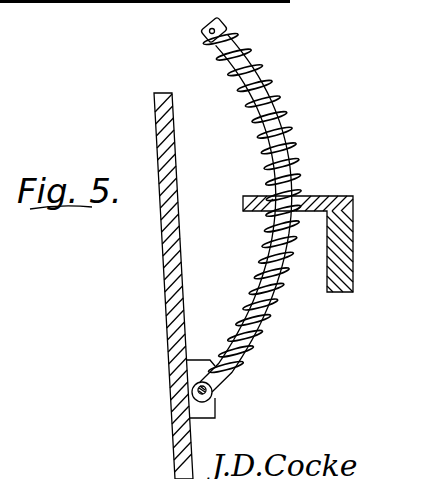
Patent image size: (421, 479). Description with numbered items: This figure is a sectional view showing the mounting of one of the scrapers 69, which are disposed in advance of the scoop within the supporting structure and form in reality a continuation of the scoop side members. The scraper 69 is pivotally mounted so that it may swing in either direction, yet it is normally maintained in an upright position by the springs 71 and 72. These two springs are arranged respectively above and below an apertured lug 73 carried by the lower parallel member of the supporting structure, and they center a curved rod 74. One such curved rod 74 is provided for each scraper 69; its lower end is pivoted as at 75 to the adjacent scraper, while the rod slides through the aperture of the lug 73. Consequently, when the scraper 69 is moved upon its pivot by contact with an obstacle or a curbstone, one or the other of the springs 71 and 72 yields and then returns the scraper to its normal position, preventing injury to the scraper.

The scraper 69 is at (166, 319).
The spring 71 is at (271, 204).
The spring 72 is at (275, 127).
The apertured lug 73 is at (326, 196).
The curved rod 74 is at (270, 283).
The pivot 75 is at (215, 398).